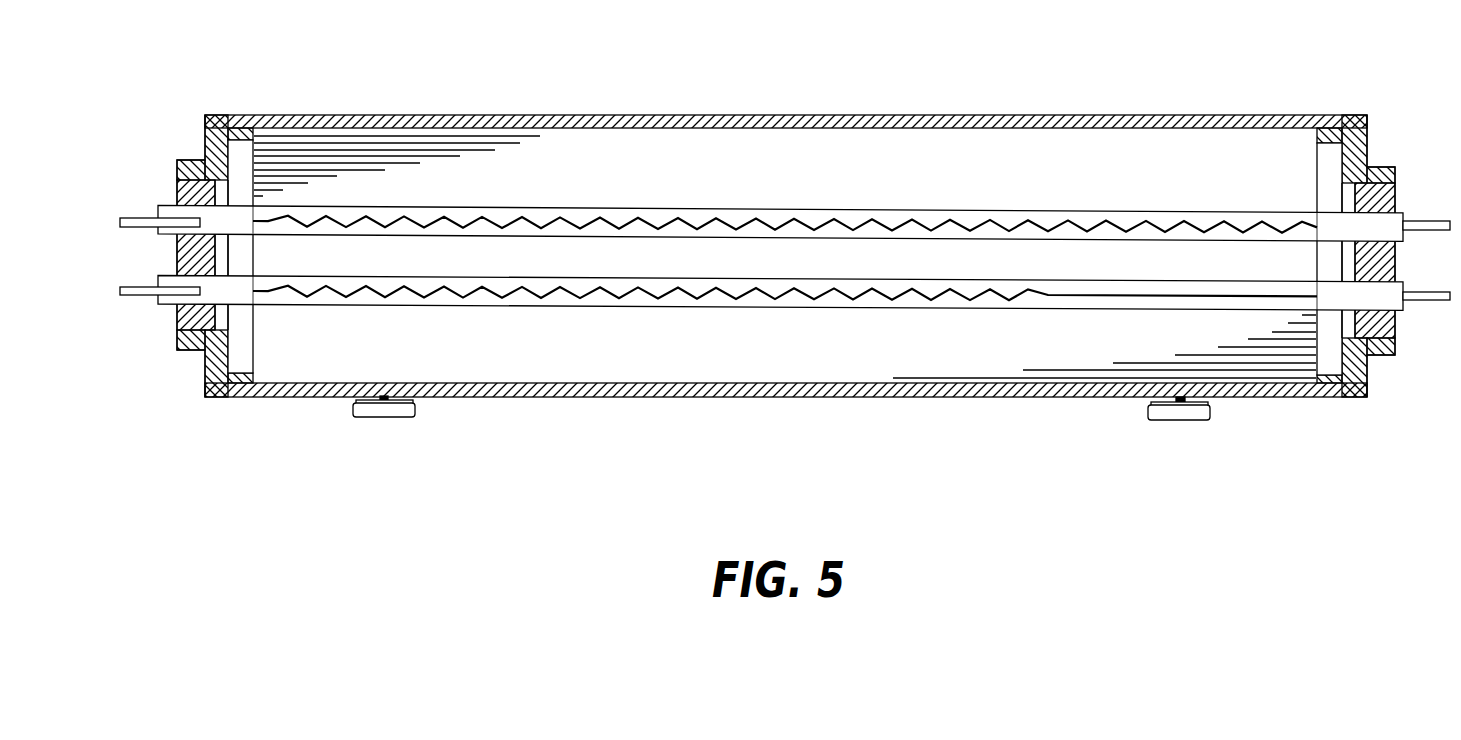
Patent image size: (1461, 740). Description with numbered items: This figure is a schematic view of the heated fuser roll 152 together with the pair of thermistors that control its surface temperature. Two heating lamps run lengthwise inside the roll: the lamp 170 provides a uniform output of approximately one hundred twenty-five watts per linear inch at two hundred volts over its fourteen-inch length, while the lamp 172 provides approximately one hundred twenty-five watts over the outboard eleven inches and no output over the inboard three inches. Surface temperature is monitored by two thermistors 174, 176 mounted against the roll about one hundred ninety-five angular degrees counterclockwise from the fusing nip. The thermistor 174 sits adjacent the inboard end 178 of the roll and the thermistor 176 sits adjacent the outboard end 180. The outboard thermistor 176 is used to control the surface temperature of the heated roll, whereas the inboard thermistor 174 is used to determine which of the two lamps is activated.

The housing tube 152 is at (652, 115).
The lamp 170 is at (675, 208).
The lamp 172 is at (662, 305).
The thermistor 174 is at (385, 408).
The thermistor 176 is at (1188, 417).
The inboard end 178 is at (202, 370).
The outboard end 180 is at (1365, 378).